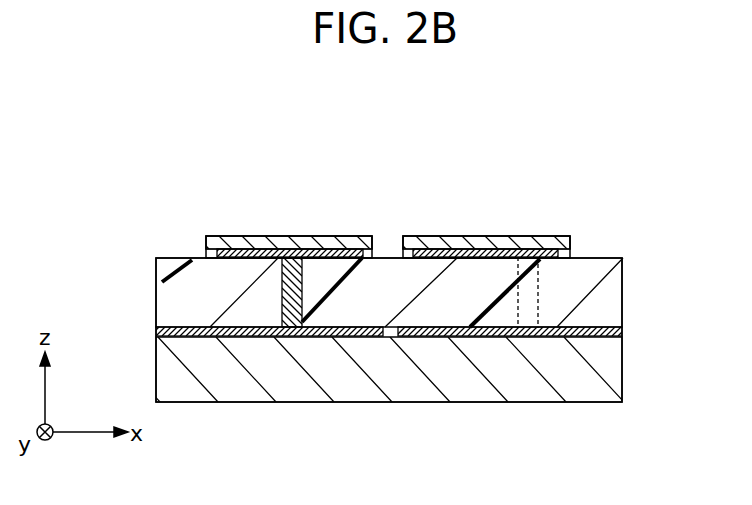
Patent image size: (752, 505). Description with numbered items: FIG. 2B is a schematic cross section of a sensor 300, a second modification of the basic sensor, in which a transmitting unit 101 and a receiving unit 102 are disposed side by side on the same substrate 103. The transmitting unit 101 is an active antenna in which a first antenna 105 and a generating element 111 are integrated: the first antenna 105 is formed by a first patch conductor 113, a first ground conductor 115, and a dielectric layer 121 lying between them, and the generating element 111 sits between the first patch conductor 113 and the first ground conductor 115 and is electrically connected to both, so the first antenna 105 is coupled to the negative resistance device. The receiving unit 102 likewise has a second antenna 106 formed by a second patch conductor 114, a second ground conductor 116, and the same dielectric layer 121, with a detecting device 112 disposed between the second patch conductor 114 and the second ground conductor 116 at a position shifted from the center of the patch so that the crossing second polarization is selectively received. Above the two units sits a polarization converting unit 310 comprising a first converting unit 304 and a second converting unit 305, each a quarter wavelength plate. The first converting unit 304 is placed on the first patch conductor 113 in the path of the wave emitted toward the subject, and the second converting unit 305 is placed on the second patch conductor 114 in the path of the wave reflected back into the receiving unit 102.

The sensor 300 is at (389, 381).
The polarization converting unit 310 is at (437, 153).
The first converting unit 304 is at (372, 238).
The second converting unit 305 is at (403, 238).
The transmitting unit 101 is at (365, 226).
The receiving unit 102 is at (560, 226).
The first antenna 105 is at (212, 253).
The second antenna 106 is at (397, 252).
The dielectric layer 121 is at (613, 290).
The substrate 103 is at (613, 352).
The generating element 111 is at (290, 317).
The detecting device 112 is at (530, 303).
The first patch conductor 113 is at (325, 253).
The second patch conductor 114 is at (453, 257).
The first ground conductor 115 is at (230, 333).
The second ground conductor 116 is at (573, 335).